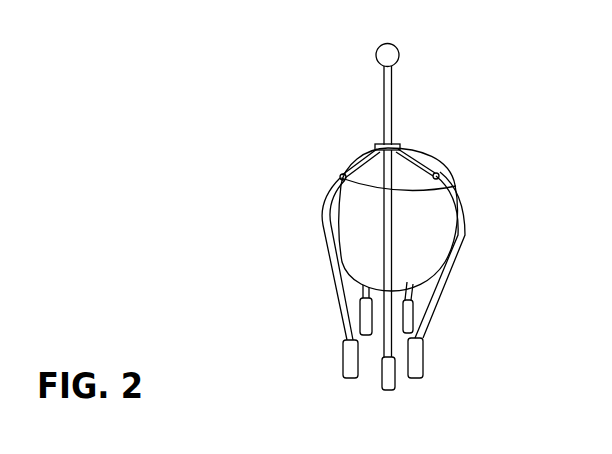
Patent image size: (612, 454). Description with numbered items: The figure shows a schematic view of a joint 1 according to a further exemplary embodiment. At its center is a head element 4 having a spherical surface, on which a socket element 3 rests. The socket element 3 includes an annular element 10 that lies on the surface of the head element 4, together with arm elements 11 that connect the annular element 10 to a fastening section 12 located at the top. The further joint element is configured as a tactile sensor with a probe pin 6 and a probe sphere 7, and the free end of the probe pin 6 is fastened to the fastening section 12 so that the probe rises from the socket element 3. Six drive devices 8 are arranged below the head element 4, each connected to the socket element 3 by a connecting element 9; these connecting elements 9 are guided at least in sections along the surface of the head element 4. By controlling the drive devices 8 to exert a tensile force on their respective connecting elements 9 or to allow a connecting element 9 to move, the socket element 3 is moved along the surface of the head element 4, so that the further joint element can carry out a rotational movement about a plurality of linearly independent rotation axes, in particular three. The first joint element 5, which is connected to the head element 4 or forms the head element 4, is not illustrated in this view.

The joint 1 is at (252, 295).
The socket element 3 is at (438, 158).
The head element 4 is at (437, 203).
The first joint element 5 is at (383, 103).
The probe pin 6 is at (393, 92).
The probe sphere 7 is at (395, 53).
The drive devices 8 is at (367, 316).
The connecting elements 9 is at (335, 198).
The annular element 10 is at (341, 172).
The arm elements 11 is at (365, 160).
The fastening section 12 is at (390, 157).